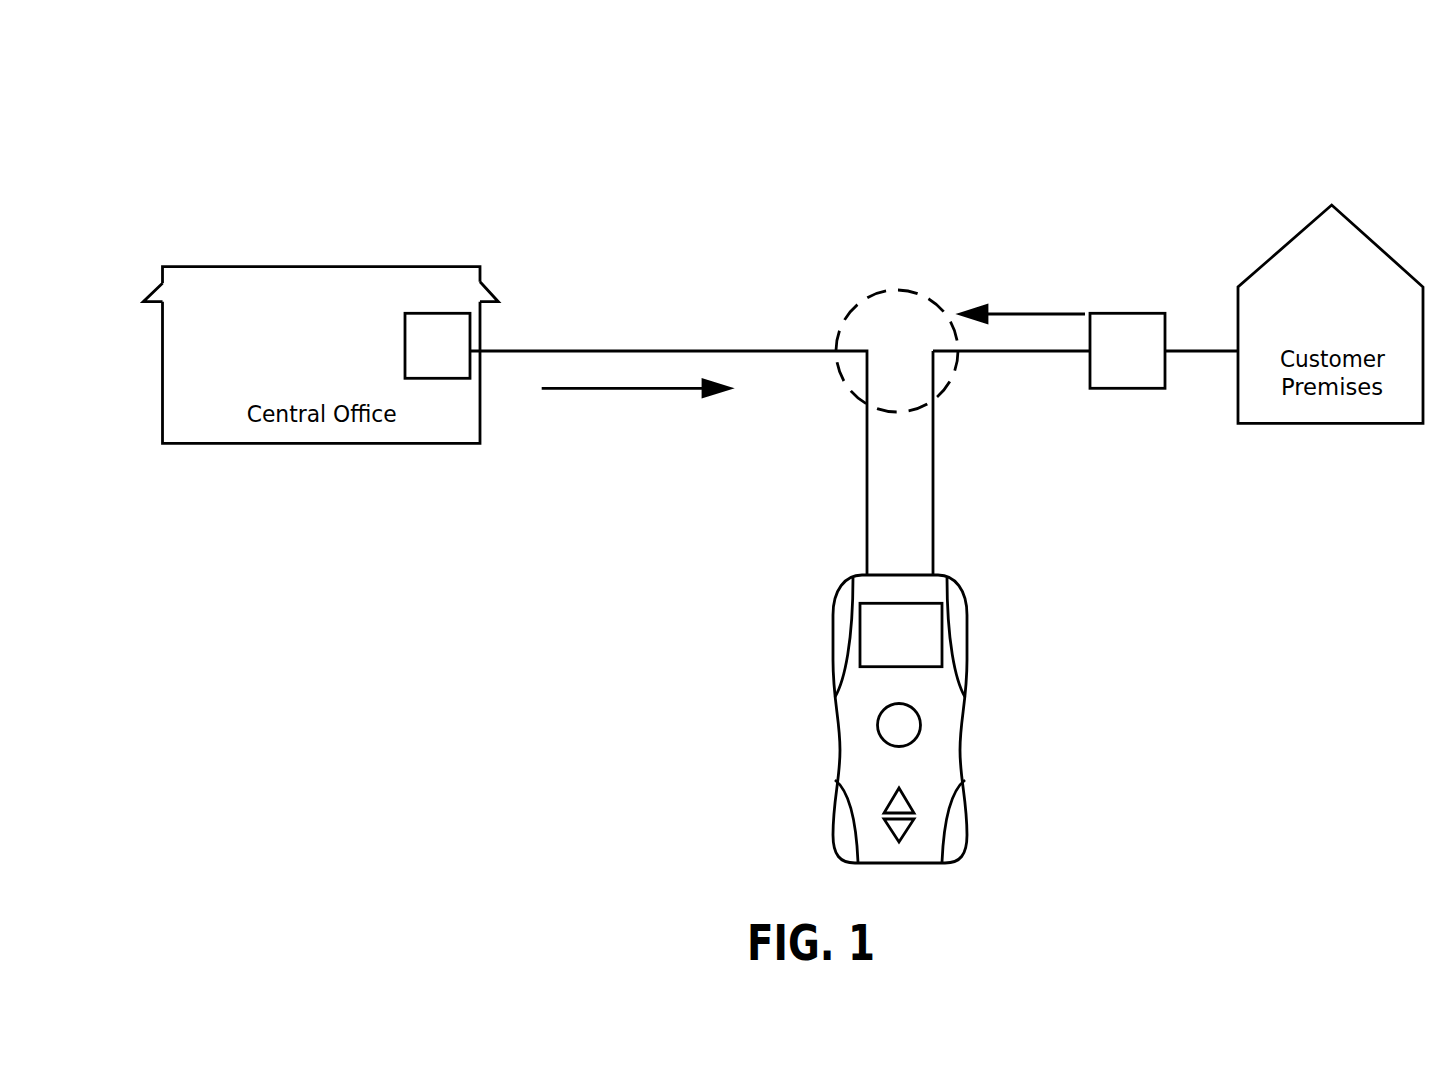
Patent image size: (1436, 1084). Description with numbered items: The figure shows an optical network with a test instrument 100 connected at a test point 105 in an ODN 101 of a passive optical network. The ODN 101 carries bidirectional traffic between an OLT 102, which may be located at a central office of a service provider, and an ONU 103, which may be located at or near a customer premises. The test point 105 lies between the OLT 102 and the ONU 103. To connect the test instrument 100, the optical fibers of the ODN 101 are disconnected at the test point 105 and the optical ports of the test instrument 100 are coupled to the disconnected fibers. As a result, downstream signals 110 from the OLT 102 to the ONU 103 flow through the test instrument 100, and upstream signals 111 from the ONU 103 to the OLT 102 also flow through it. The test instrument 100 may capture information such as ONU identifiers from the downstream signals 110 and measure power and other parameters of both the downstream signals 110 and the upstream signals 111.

The test instrument 100 is at (970, 675).
The ODN 101 is at (637, 183).
The OLT 102 is at (433, 312).
The ONU 103 is at (1127, 390).
The test point 105 is at (867, 297).
The downstream signals 110 is at (636, 432).
The upstream signals 111 is at (1036, 289).